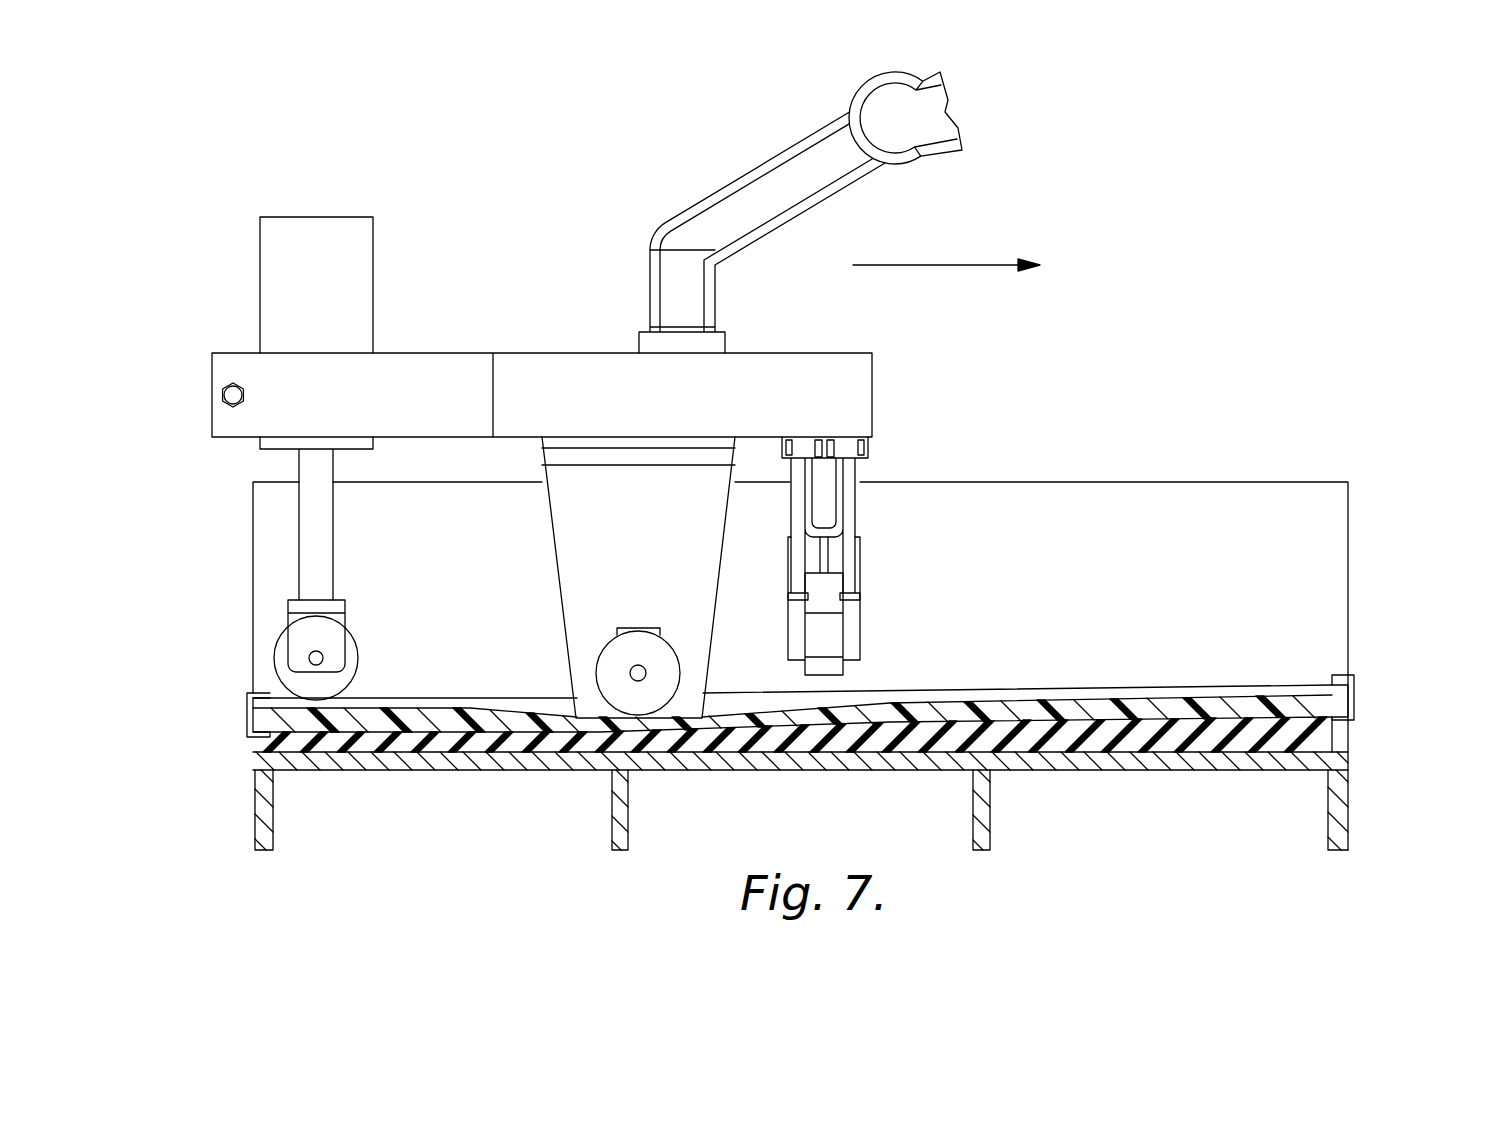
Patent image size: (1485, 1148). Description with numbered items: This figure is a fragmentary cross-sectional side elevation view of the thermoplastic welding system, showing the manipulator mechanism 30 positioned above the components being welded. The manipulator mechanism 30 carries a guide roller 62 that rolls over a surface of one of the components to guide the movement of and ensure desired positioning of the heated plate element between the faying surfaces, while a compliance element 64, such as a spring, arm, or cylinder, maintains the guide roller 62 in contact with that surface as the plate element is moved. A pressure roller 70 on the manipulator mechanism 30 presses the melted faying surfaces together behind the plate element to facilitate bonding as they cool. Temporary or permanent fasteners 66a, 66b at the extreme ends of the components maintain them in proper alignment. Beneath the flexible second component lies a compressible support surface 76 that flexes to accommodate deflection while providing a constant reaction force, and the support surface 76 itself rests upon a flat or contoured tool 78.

The manipulator mechanism 30 is at (930, 402).
The guide roller 62 is at (848, 632).
The compliance element 64 is at (823, 505).
The fastener 66a is at (220, 702).
The fastener 66b is at (1360, 667).
The pressure roller 70 is at (352, 650).
The support surface 76 is at (1335, 733).
The tool 78 is at (1337, 760).